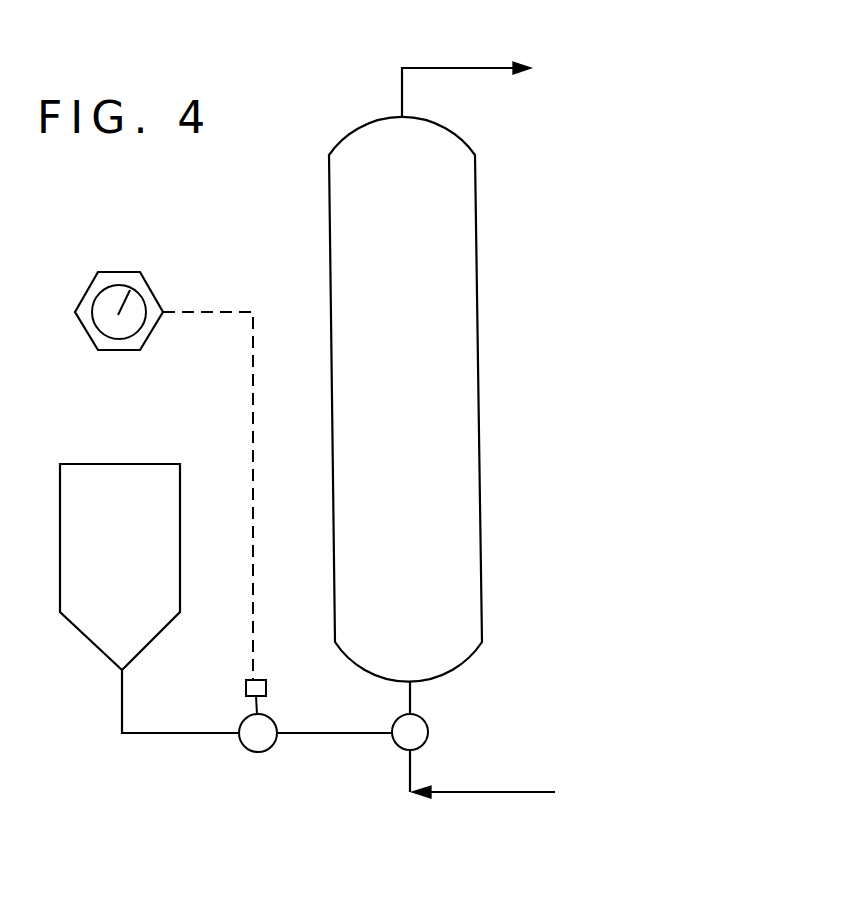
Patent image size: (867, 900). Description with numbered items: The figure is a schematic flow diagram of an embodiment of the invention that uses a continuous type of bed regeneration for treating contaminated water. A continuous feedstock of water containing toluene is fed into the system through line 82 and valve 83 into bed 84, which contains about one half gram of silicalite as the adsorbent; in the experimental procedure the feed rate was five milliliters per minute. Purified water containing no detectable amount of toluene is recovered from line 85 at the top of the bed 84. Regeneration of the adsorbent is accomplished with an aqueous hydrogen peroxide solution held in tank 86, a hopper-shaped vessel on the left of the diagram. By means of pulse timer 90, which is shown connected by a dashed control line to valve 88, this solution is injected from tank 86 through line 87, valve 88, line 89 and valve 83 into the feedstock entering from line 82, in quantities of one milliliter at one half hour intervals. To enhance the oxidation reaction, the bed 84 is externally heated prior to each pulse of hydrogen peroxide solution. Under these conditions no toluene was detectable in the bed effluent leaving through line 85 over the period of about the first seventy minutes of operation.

The line 82 is at (466, 791).
The valve 83 is at (431, 726).
The bed 84 is at (478, 358).
The line 85 is at (447, 67).
The tank 86 is at (181, 525).
The line 87 is at (124, 700).
The valve 88 is at (243, 748).
The line 89 is at (300, 735).
The pulse timer 90 is at (150, 285).